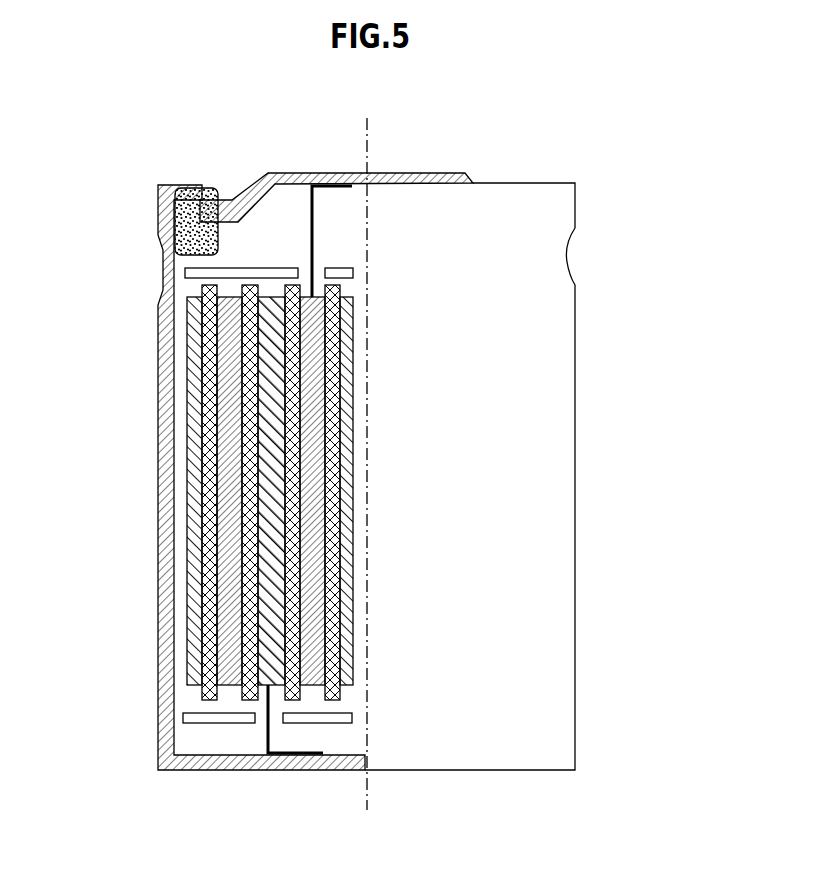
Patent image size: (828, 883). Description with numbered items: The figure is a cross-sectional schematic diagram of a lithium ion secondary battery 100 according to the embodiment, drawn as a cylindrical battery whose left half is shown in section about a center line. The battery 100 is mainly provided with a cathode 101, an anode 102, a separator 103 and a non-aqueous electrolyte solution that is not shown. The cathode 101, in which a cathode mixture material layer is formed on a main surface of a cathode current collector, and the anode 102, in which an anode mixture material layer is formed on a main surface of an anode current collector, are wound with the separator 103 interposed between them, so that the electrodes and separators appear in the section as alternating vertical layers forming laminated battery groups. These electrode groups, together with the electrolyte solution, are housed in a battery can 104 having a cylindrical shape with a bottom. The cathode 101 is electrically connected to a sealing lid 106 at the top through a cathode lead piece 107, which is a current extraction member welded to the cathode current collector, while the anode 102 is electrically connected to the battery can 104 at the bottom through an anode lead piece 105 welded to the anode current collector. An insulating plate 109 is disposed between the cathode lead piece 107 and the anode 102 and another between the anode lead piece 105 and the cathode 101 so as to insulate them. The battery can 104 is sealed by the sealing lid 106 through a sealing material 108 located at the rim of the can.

The lithium ion secondary battery 100 is at (576, 324).
The cathode 101 is at (232, 687).
The anode 102 is at (187, 598).
The separator 103 is at (202, 695).
The battery can 104 is at (161, 530).
The anode lead piece 105 is at (265, 738).
The sealing lid 106 is at (425, 172).
The cathode lead piece 107 is at (310, 228).
The sealing material 108 is at (182, 202).
The insulating plate 109 is at (185, 272).